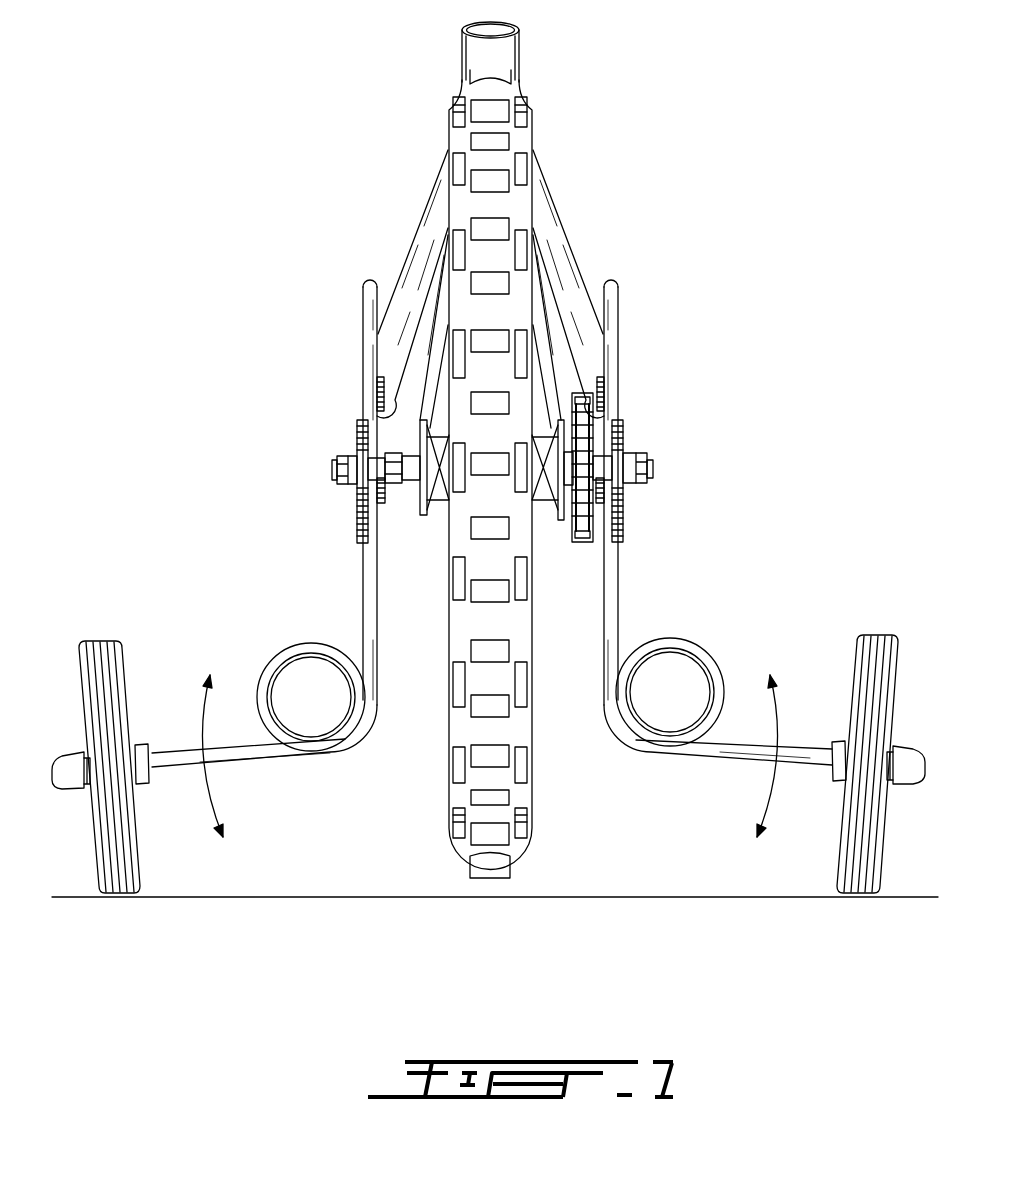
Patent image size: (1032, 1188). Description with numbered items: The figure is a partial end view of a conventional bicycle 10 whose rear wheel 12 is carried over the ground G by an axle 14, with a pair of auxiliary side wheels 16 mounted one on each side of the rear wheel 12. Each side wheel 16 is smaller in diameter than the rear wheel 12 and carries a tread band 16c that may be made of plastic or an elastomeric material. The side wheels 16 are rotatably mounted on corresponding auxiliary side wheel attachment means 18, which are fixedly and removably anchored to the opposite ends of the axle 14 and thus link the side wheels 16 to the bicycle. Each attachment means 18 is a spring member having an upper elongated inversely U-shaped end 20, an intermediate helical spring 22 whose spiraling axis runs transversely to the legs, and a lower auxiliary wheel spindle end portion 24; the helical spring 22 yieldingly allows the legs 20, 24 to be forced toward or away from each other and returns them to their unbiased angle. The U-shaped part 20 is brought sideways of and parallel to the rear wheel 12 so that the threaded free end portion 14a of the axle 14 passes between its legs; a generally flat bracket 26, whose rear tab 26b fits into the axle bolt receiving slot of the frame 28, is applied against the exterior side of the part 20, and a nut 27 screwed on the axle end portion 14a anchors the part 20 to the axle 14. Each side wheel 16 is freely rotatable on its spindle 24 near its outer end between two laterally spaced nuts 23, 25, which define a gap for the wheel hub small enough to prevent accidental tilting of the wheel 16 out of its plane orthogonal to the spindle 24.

The bicycle 10 is at (622, 233).
The rear wheel 12 is at (453, 767).
The axle 14 is at (401, 485).
The threaded free end portion of the rear axle 14a is at (648, 476).
The auxiliary side wheel 16 is at (78, 692).
The tread band 16c is at (102, 644).
The auxiliary side wheel attachment means 18 is at (359, 738).
The upper elongated inversely U-shaped end 20 is at (348, 589).
The intermediate helical spring 22 is at (314, 644).
The nut 23 is at (70, 777).
The lower auxiliary wheel spindle end portion 24 is at (185, 768).
The nut 25 is at (147, 756).
The flat bracket 26 is at (357, 438).
The rear tab 26b is at (375, 480).
The nut 27 is at (348, 457).
The frame 28 is at (385, 383).
The ground G is at (906, 897).